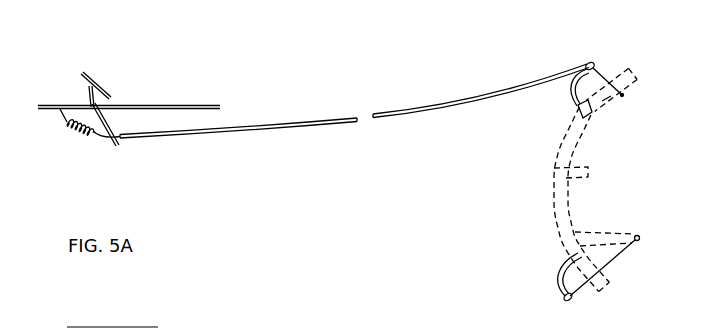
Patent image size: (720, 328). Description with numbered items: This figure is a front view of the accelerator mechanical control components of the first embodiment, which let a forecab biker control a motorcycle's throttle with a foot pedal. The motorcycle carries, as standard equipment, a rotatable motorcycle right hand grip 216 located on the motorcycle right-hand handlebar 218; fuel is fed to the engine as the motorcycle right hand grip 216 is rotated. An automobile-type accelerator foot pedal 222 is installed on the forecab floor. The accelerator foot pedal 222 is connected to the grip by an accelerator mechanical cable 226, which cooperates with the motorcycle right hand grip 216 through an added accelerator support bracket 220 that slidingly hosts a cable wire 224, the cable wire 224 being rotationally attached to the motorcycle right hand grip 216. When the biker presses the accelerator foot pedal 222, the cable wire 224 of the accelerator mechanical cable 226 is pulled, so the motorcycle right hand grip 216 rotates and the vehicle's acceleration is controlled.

The motorcycle right hand grip 216 is at (637, 73).
The motorcycle right-hand handlebar 218 is at (562, 137).
The accelerator support bracket 220 is at (573, 103).
The accelerator foot pedal 222 is at (104, 89).
The cable wire 224 is at (594, 60).
The accelerator mechanical cable 226 is at (330, 119).